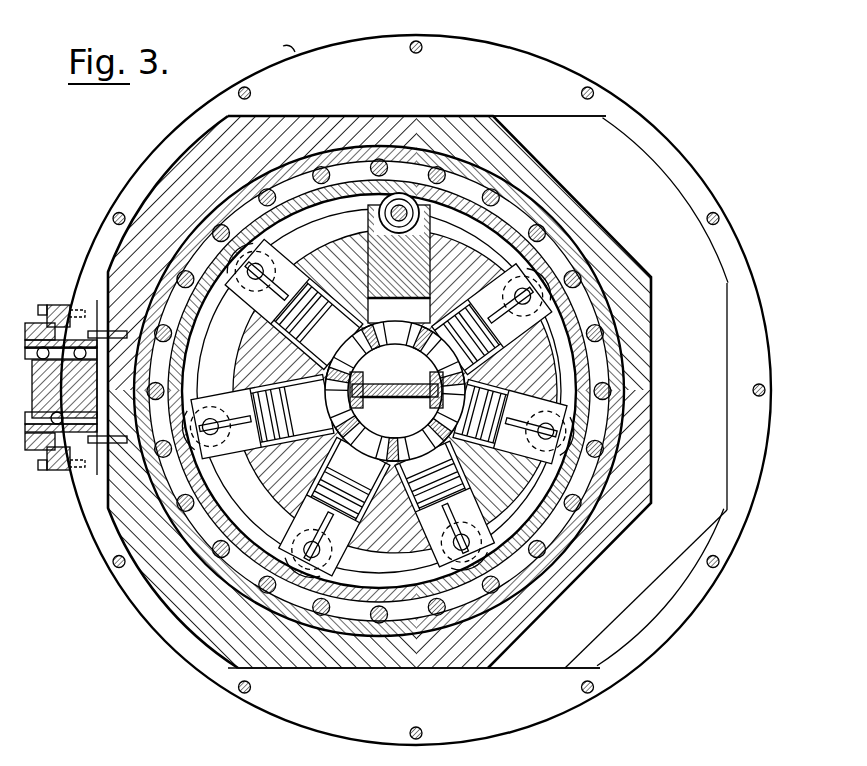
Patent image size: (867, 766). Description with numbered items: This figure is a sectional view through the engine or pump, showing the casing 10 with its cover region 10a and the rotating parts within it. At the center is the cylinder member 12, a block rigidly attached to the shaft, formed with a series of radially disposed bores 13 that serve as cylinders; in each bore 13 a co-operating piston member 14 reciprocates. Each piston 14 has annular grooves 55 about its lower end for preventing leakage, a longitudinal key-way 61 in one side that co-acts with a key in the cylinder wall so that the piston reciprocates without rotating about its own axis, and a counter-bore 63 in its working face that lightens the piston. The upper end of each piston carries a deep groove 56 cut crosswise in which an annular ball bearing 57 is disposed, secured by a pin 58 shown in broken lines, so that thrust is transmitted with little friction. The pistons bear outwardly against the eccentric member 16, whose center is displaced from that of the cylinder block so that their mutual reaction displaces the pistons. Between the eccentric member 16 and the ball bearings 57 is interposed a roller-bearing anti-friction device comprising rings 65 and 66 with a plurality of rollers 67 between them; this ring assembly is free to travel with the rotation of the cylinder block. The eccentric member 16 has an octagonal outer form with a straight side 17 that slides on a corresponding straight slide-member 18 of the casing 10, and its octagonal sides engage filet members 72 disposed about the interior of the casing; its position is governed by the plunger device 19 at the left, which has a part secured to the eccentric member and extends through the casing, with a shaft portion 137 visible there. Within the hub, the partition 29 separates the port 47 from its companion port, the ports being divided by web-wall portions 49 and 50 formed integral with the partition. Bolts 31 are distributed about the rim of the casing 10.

The casing 10 is at (700, 121).
The casing cover 10a is at (275, 48).
The cylinder member 12 is at (483, 260).
The radially disposed bores 13 is at (327, 461).
The piston member 14 is at (297, 528).
The eccentric member 16 is at (597, 248).
The straight side 17 is at (478, 115).
The slide-member 18 is at (553, 115).
The plunger device 19 is at (64, 290).
The partition 29 is at (396, 391).
The bolt 31 is at (418, 53).
The port 47 is at (396, 388).
The web-wall portion 49 is at (430, 405).
The web-wall portion 50 is at (332, 403).
The annular grooves 55 is at (528, 293).
The groove 56 is at (430, 230).
The annular ball bearing 57 is at (573, 436).
The pin 58 is at (393, 213).
The key-way 61 is at (460, 540).
The counter-bore 63 is at (388, 297).
The ring 65 is at (610, 342).
The ring 66 is at (590, 372).
The rollers 67 is at (602, 392).
The filet members 72 is at (669, 592).
The shaft 137 is at (77, 377).